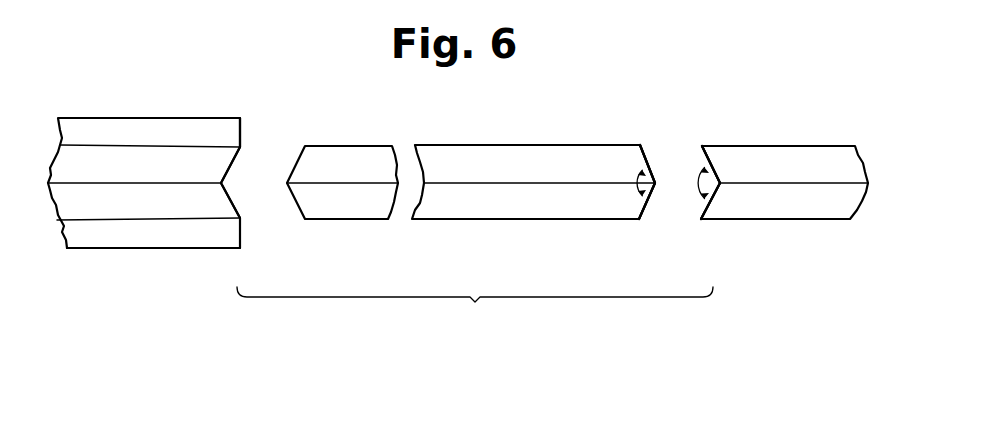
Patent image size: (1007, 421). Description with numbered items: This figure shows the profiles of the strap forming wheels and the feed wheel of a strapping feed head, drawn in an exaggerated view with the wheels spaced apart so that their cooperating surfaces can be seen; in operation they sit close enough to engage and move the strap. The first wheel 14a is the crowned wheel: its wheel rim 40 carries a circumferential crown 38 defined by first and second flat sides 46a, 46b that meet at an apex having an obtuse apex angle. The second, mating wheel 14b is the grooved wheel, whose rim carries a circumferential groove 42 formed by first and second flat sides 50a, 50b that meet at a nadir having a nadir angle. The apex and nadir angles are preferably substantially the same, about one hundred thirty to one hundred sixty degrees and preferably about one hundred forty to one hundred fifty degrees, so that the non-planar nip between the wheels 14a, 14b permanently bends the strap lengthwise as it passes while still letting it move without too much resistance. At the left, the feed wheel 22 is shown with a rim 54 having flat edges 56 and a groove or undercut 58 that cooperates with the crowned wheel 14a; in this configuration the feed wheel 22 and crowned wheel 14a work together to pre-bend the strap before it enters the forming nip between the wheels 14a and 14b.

The first wheel 14a is at (460, 145).
The second wheel 14b is at (796, 146).
The feed wheel 22 is at (130, 118).
The crown 38 is at (673, 190).
The wheel rim 40 is at (645, 157).
The groove 42 is at (673, 190).
The first flat side 46a is at (647, 164).
The second flat side 46b is at (646, 205).
The first flat side 50a is at (705, 151).
The second flat side 50b is at (700, 219).
The rim 54 is at (240, 238).
The flat edges 56 is at (242, 128).
The groove or undercut 58 is at (222, 183).